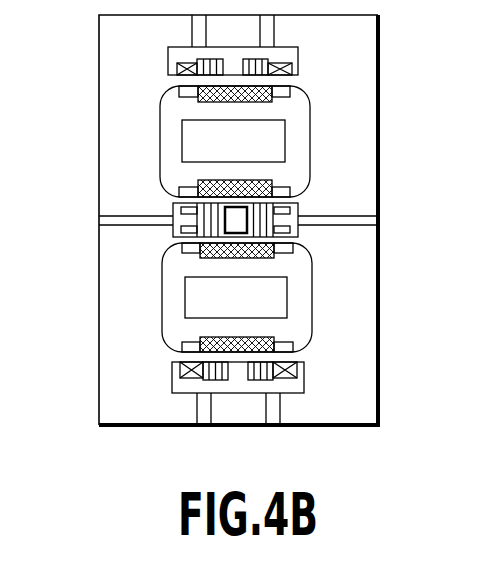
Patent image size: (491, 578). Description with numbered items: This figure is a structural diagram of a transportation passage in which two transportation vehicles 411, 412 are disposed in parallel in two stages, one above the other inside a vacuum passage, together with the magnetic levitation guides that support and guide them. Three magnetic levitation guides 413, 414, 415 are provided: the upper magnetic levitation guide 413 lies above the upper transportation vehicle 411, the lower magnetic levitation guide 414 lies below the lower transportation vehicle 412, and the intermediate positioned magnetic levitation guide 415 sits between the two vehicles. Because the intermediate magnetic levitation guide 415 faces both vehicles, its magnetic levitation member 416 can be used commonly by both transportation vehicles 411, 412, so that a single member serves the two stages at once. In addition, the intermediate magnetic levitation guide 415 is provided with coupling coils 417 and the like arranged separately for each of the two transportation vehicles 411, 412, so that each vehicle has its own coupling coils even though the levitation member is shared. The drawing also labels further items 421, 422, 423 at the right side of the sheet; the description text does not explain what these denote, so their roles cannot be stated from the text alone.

The transportation vehicle 411 is at (310, 127).
The transportation vehicle 412 is at (312, 299).
The magnetic levitation guide 413 is at (299, 62).
The magnetic levitation guide 414 is at (297, 355).
The magnetic levitation guide 415 is at (245, 217).
The magnetic levitation member 416 is at (210, 215).
The coupling coil 417 is at (180, 236).
The support rod 421 is at (295, 227).
The vacuum chamber 422 is at (295, 220).
The support member 423 is at (474, 262).